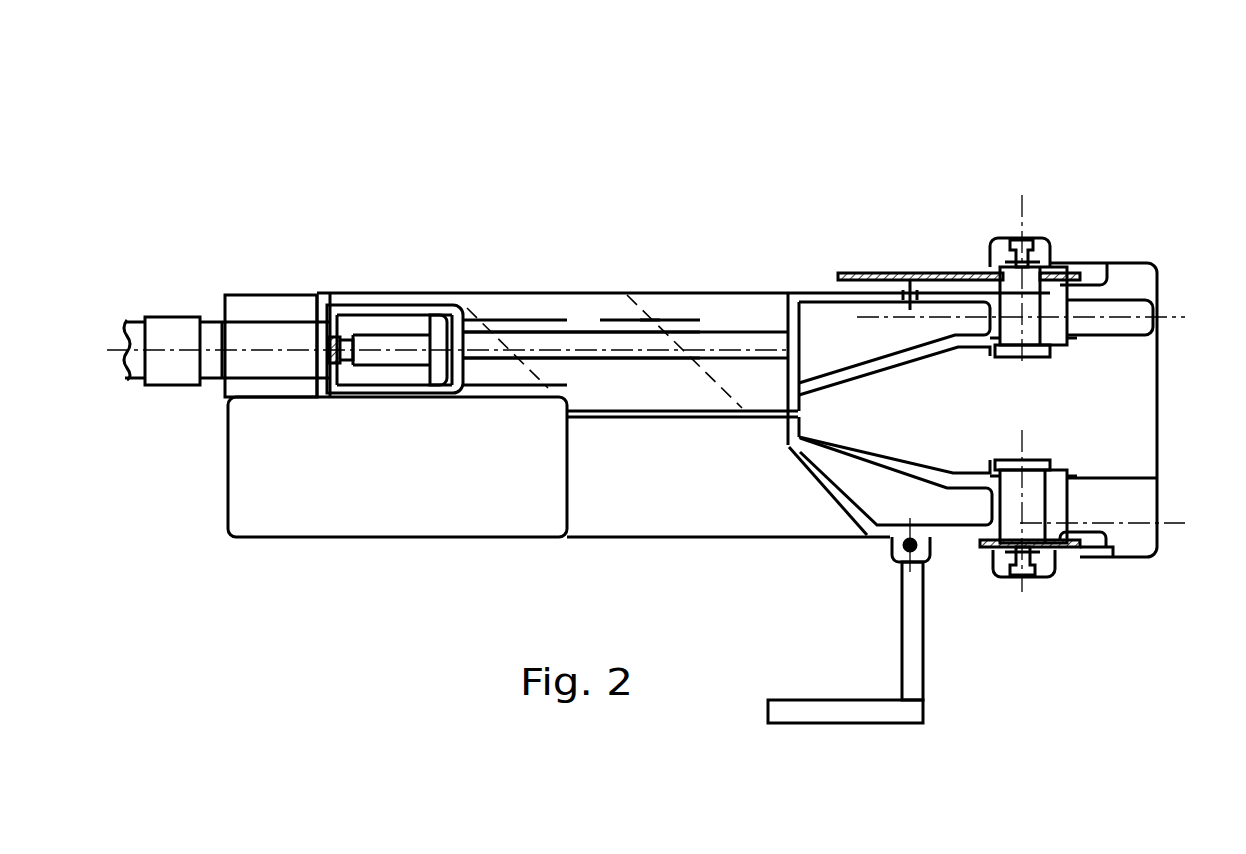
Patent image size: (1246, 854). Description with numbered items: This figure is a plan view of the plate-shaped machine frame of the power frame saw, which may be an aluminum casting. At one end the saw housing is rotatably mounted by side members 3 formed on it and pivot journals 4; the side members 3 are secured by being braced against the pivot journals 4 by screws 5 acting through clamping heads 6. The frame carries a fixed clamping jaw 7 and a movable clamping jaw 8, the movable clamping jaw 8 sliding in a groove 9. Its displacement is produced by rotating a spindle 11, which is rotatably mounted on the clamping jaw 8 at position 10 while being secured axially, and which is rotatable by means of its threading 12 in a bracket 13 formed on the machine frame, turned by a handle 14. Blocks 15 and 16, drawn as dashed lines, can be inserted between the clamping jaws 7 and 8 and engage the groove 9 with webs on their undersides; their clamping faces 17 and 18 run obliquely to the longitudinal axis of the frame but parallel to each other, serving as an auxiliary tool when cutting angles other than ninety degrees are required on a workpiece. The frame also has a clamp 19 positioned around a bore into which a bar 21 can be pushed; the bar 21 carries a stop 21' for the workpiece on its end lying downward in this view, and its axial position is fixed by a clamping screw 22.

The side members 3 is at (837, 280).
The pivot journals 4 is at (1013, 307).
The screws 5 is at (1023, 243).
The clamping heads 6 is at (998, 257).
The fixed clamping jaw 7 is at (795, 307).
The movable clamping jaw 8 is at (455, 336).
The groove 9 is at (592, 340).
The mounting position 10 is at (405, 345).
The spindle 11 is at (380, 340).
The threading 12 is at (318, 305).
The bracket 13 is at (240, 312).
The handle 14 is at (163, 334).
The block 15 is at (487, 330).
The block 16 is at (670, 307).
The clamping face 17 is at (518, 340).
The clamping face 18 is at (637, 310).
The clamp 19 is at (892, 558).
The bar 21 is at (829, 684).
The stop 21' is at (938, 631).
The clamping screw 22 is at (913, 567).